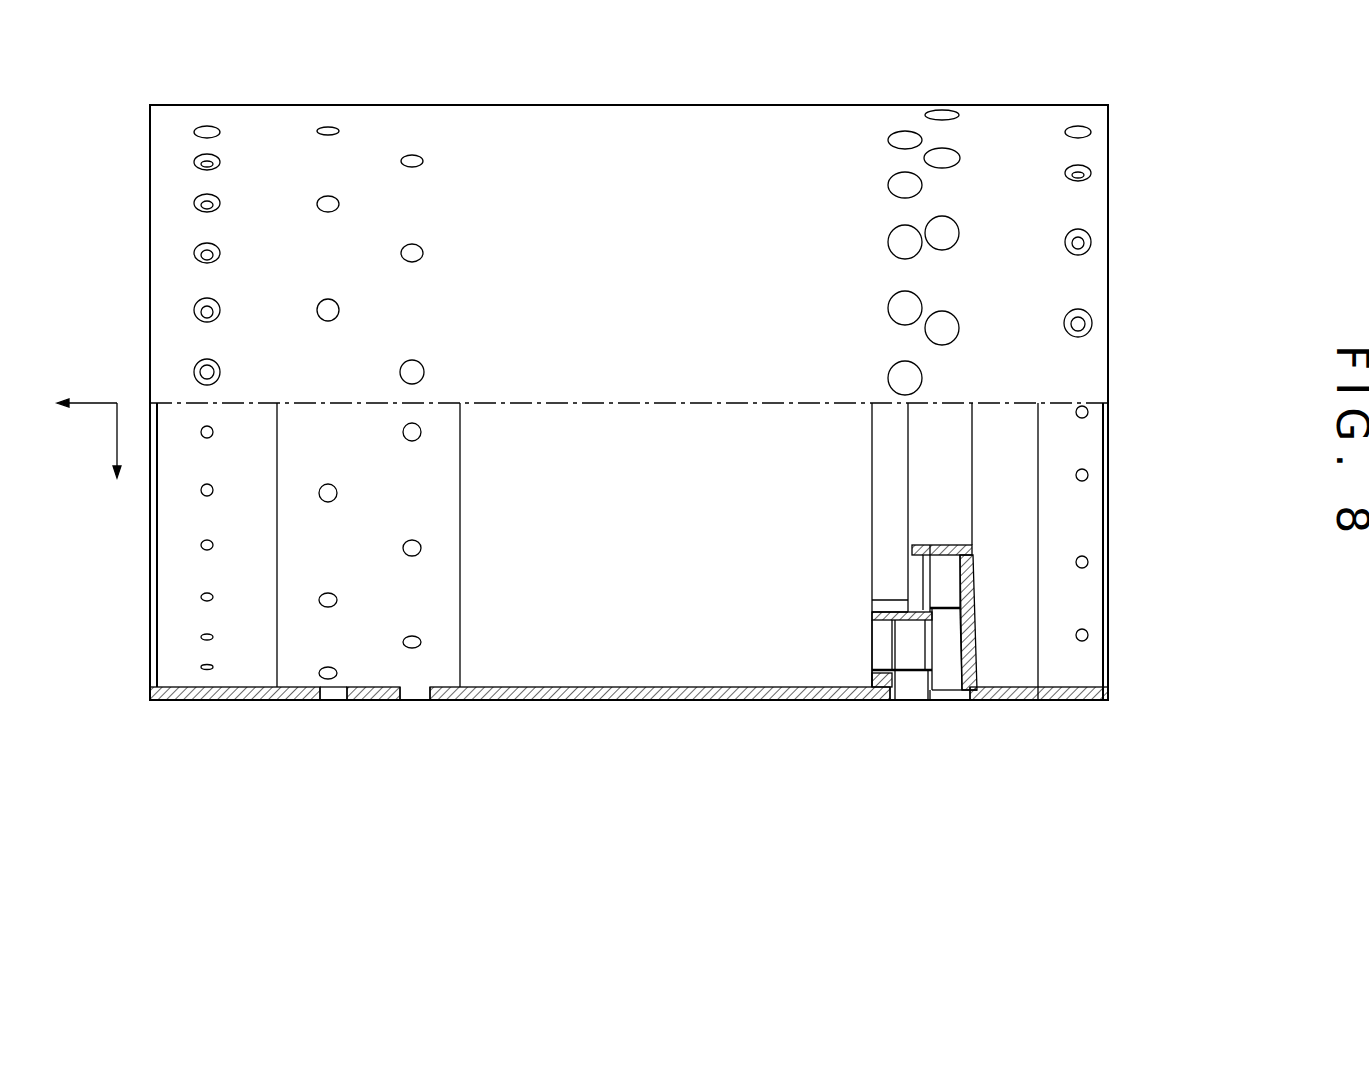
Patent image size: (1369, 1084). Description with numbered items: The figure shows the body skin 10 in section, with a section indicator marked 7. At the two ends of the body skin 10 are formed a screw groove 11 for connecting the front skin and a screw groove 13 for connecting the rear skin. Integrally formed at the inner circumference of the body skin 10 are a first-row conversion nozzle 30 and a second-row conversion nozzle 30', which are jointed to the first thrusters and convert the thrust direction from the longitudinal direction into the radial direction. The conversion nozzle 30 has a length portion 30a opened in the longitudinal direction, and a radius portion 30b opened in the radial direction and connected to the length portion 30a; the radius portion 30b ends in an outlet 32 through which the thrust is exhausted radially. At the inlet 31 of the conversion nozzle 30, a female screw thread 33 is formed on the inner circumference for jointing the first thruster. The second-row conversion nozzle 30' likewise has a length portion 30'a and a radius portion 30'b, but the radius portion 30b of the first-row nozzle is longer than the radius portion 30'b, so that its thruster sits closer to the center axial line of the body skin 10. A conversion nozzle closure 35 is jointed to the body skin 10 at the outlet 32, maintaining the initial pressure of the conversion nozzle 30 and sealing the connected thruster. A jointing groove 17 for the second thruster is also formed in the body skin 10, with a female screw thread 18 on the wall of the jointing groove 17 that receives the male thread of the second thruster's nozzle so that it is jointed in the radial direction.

The section view direction arrow 7 is at (80, 450).
The body skin 10 is at (640, 706).
The screw groove 11 is at (1090, 639).
The screw groove 13 is at (217, 637).
The jointing groove 17 is at (333, 703).
The female screw thread 18 is at (327, 703).
The conversion nozzle 30 is at (1058, 563).
The length portion 30a is at (948, 577).
The radius portion 30b is at (948, 673).
The conversion nozzle 30' is at (856, 717).
The length portion 30'a is at (874, 721).
The radius portion 30'b is at (913, 765).
The inlet 31 is at (915, 545).
The outlet 32 is at (977, 703).
The female screw thread 33 is at (908, 610).
The conversion nozzle closure 35 is at (933, 692).